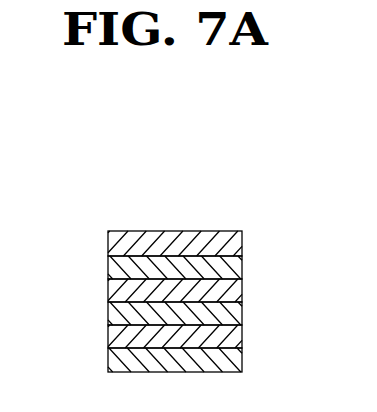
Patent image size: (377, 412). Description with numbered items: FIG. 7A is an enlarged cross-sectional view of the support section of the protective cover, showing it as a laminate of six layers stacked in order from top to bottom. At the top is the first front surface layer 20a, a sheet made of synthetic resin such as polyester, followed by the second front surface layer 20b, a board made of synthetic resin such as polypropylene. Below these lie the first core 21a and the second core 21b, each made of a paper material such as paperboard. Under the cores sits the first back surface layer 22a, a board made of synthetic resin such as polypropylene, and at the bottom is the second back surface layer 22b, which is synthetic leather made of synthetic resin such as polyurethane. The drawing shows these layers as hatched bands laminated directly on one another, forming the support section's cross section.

The first front surface layer 20a is at (108, 241).
The second front surface layer 20b is at (242, 262).
The first core 21a is at (108, 287).
The second core 21b is at (242, 310).
The first back surface layer 22a is at (108, 332).
The second back surface layer 22b is at (242, 359).